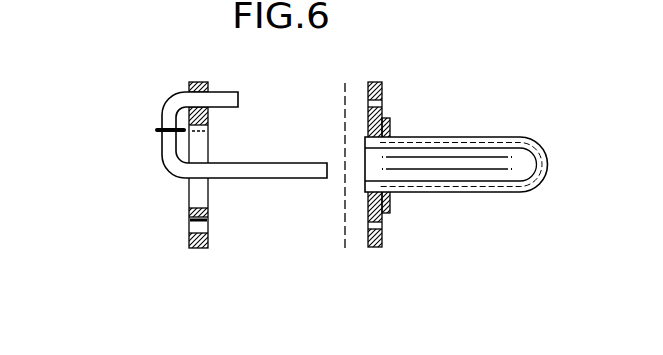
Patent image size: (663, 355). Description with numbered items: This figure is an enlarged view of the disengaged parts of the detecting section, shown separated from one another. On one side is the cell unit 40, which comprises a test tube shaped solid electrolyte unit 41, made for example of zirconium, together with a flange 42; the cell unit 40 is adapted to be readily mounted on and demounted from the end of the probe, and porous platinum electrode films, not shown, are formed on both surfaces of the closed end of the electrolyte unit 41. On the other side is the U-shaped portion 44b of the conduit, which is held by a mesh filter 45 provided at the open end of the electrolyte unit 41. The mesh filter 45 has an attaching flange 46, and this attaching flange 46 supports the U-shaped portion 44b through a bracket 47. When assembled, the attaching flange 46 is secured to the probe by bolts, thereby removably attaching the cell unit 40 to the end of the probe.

The cell unit 40 is at (471, 135).
The solid electrolyte unit 41 is at (482, 137).
The flange 42 is at (383, 85).
The U-shaped portion 44b is at (258, 168).
The mesh filter 45 is at (343, 230).
The attaching flange 46 is at (190, 242).
The bracket 47 is at (160, 130).